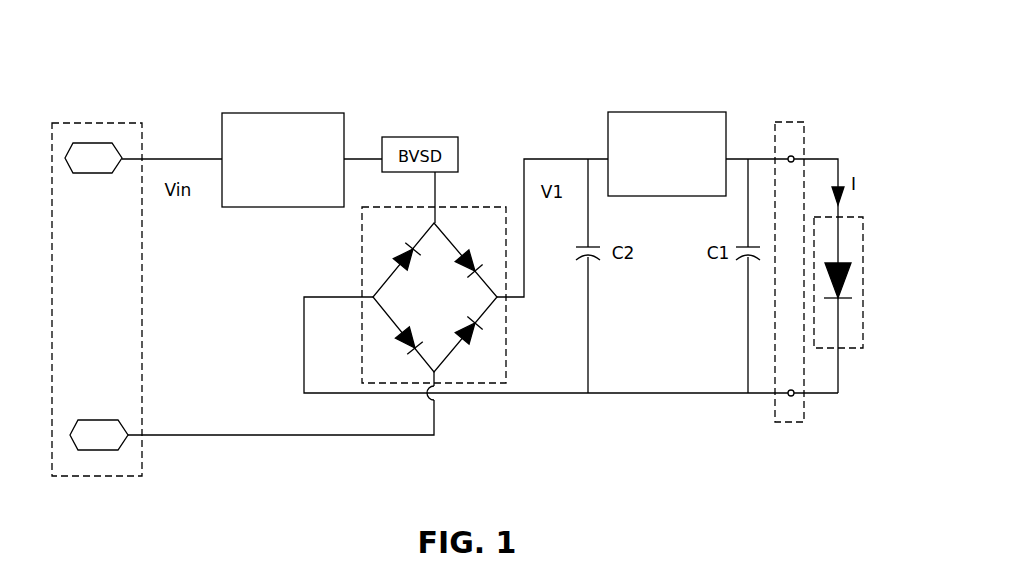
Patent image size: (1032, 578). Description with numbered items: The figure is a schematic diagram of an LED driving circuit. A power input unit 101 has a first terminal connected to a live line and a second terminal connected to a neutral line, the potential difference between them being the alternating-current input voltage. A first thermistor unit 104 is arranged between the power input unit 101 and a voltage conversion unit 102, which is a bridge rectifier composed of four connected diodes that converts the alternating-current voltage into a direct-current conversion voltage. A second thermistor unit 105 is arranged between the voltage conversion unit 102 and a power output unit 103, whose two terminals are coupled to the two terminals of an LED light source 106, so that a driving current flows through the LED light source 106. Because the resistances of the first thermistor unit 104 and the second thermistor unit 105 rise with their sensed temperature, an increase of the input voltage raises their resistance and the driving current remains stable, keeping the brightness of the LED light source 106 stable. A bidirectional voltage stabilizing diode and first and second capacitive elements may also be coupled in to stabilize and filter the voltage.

The power input unit 101 is at (85, 117).
The voltage conversion unit 102 is at (483, 207).
The power output unit 103 is at (797, 120).
The first thermistor unit 104 is at (292, 113).
The second thermistor unit 105 is at (665, 112).
The LED light source 106 is at (861, 235).